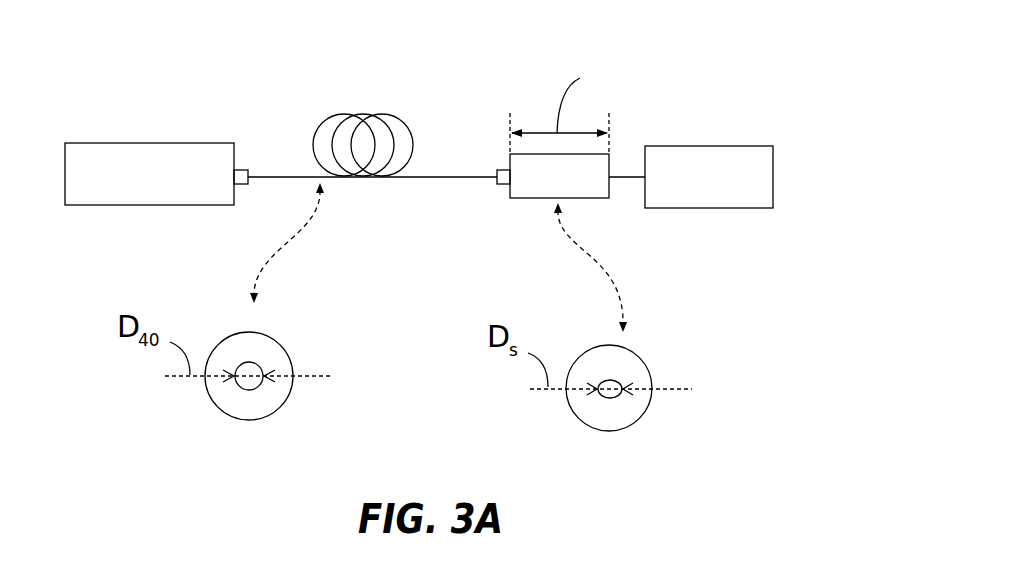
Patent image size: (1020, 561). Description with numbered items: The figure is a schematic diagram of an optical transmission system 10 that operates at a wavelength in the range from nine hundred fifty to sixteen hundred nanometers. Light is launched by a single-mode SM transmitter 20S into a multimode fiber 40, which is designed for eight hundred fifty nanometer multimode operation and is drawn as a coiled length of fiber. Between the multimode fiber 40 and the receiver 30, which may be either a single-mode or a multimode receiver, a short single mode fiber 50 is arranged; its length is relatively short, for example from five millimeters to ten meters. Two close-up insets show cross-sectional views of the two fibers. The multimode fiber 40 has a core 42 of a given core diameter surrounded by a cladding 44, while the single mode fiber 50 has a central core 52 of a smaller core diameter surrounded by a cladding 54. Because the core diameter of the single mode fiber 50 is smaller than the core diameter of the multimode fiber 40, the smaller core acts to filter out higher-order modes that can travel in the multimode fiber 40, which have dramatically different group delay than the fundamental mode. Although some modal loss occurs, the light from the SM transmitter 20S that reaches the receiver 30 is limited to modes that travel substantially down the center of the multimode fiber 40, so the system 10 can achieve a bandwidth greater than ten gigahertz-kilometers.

The optical transmission system 10 is at (178, 80).
The SM transmitter 20S is at (172, 190).
The receiver 30 is at (695, 190).
The multimode fiber 40 is at (428, 176).
The core 42 is at (275, 400).
The cladding 44 is at (230, 354).
The single mode fiber 50 is at (567, 190).
The central core 52 is at (633, 410).
The cladding 54 is at (588, 363).